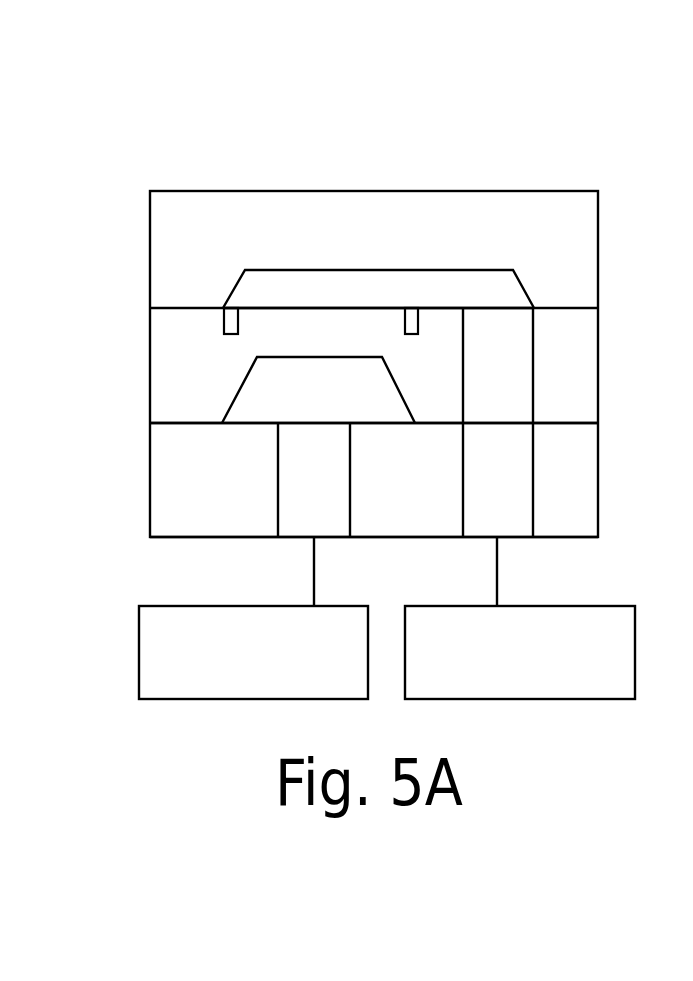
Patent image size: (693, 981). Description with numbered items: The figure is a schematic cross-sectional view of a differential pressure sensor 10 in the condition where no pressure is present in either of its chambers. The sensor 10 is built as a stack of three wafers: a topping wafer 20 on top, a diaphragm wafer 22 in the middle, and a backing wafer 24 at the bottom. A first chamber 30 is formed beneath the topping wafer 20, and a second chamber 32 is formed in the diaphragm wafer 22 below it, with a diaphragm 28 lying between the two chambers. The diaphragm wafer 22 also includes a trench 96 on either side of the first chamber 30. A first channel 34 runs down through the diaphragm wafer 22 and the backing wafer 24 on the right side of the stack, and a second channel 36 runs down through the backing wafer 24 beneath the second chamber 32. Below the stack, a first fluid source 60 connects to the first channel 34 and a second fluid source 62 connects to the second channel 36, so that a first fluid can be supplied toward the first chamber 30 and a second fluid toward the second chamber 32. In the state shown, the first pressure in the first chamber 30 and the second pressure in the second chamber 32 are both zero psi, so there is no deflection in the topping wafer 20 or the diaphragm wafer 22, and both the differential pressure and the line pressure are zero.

The differential pressure sensor 10 is at (142, 130).
The topping wafer 20 is at (577, 253).
The diaphragm wafer 22 is at (572, 363).
The backing wafer 24 is at (577, 462).
The diaphragm 28 is at (303, 347).
The first chamber 30 is at (377, 287).
The second chamber 32 is at (267, 391).
The first channel 34 is at (505, 343).
The second channel 36 is at (293, 466).
The trench 96 is at (412, 317).
The first fluid source 60 is at (590, 606).
The second fluid source 62 is at (139, 650).